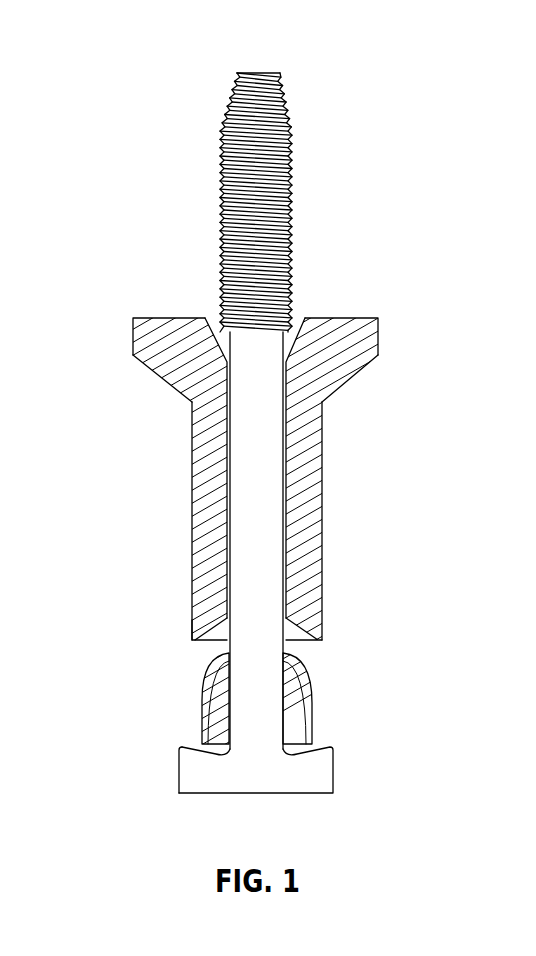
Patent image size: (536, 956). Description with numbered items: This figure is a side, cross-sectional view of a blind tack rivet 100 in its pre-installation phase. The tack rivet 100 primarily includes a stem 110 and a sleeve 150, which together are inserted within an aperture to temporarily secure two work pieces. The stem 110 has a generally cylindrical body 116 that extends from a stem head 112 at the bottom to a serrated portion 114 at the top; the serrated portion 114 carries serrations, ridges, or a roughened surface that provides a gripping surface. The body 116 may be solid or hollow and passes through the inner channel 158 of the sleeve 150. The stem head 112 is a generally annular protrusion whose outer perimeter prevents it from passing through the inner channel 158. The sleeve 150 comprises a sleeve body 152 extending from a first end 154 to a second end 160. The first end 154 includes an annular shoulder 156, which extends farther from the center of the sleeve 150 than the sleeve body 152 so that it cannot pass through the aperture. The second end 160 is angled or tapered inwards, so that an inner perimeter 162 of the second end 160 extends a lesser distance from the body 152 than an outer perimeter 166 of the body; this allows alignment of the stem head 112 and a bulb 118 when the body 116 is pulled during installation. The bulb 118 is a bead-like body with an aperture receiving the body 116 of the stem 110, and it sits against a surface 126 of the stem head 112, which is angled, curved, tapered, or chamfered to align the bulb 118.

The tack rivet 100 is at (137, 74).
The stem 110 is at (196, 153).
The stem head 112 is at (320, 777).
The serrated portion 114 is at (278, 160).
The body 116 is at (245, 447).
The bulb 118 is at (303, 708).
The surface 126 is at (180, 770).
The sleeve 150 is at (165, 500).
The sleeve body 152 is at (303, 512).
The first end 154 is at (372, 318).
The annular shoulder 156 is at (345, 366).
The inner channel 158 is at (283, 428).
The second end 160 is at (302, 623).
The inner perimeter 162 is at (227, 620).
The outer perimeter 166 is at (193, 632).